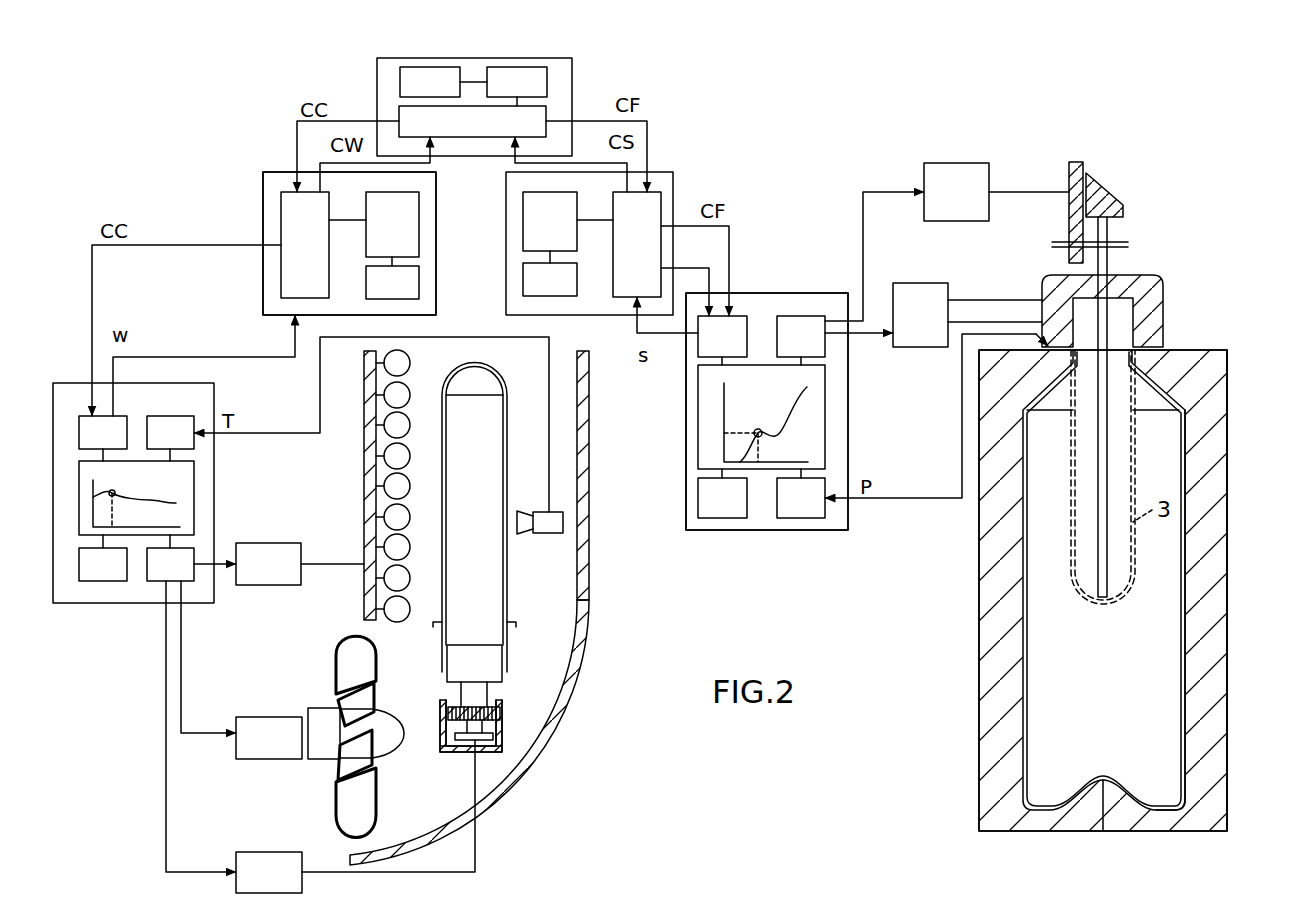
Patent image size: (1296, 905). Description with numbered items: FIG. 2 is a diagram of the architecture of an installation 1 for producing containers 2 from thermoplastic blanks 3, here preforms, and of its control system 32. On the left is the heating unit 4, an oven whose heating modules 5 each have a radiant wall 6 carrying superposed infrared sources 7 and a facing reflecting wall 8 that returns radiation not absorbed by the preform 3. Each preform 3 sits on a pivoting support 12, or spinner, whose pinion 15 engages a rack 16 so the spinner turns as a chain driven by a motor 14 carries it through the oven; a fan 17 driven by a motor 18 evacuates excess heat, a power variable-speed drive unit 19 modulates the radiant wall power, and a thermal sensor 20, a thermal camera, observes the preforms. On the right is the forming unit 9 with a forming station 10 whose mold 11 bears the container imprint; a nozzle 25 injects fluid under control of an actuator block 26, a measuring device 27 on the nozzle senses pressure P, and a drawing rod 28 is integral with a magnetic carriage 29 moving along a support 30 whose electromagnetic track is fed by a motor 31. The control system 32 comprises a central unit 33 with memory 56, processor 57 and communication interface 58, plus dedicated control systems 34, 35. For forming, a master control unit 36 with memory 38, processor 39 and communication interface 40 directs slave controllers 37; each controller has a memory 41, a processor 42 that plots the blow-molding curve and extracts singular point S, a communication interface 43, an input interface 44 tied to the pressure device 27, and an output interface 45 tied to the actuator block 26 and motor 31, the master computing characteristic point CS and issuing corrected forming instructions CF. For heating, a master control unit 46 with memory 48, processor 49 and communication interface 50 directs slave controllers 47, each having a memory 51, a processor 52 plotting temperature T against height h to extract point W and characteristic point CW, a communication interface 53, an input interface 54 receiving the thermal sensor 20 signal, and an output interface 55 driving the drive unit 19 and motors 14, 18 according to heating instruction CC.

The installation 1 is at (995, 112).
The container 2 is at (1028, 695).
The blank 3 is at (508, 590).
The heating unit 4 is at (561, 766).
The heating module 5 is at (487, 732).
The radiant wall 6 is at (364, 478).
The sources of infrared radiation 7 is at (398, 457).
The reflecting wall 8 is at (582, 493).
The forming unit 9 is at (979, 733).
The forming station 10 is at (1065, 590).
The mold 11 is at (1213, 715).
The pivoting support 12 is at (452, 678).
The motor 14 is at (257, 884).
The pinion 15 is at (501, 715).
The rack 16 is at (500, 735).
The fan 17 is at (336, 690).
The motor 18 is at (257, 750).
The power variable-speed drive unit 19 is at (256, 576).
The thermal sensor 20 is at (565, 528).
The nozzle 25 is at (1158, 292).
The actuator block 26 is at (908, 326).
The pressure measuring device 27 is at (1045, 348).
The drawing rod 28 is at (1098, 488).
The carriage 29 is at (1103, 199).
The support 30 is at (1069, 172).
The motor 31 is at (944, 203).
The control system 32 is at (574, 72).
The central unit 33 is at (528, 106).
The dedicated control system 34 is at (744, 183).
The dedicated control system 35 is at (233, 210).
The master control unit 36 is at (666, 168).
The slave controller 37 is at (776, 291).
The memory 38 is at (538, 291).
The processor 39 is at (538, 232).
The communication interface 40 is at (625, 254).
The memory 41 is at (710, 509).
The processor 42 is at (749, 393).
The communication interface 43 is at (710, 348).
The input interface 44 is at (789, 509).
The output interface 45 is at (789, 348).
The master control unit 46 is at (262, 172).
The slave controller 47 is at (216, 391).
The memory 48 is at (380, 294).
The processor 49 is at (380, 234).
The communication interface 50 is at (293, 254).
The memory 51 is at (91, 576).
The processor 52 is at (163, 488).
The communication interface 53 is at (91, 444).
The input interface 54 is at (158, 444).
The output interface 55 is at (158, 576).
The memory 56 is at (418, 94).
The processor 57 is at (505, 94).
The communication interface 58 is at (460, 133).